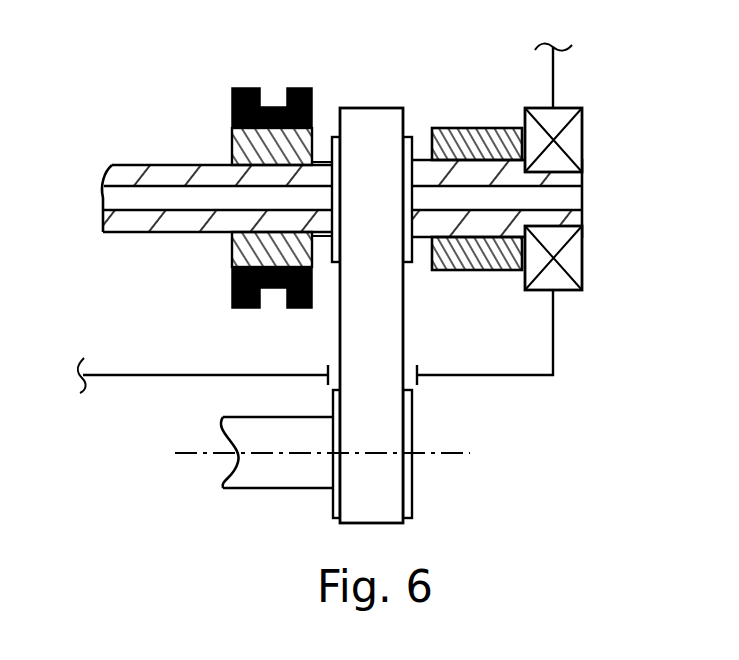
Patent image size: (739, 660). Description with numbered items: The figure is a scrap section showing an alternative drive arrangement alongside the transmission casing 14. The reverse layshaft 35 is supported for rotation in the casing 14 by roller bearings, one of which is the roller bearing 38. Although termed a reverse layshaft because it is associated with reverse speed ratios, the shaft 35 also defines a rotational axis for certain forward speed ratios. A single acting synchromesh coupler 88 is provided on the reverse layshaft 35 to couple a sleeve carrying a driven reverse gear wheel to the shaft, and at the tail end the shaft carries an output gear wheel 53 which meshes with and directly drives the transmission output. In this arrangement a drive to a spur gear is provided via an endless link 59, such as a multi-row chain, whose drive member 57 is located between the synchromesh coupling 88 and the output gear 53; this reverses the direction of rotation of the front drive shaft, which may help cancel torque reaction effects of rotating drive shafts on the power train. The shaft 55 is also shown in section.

The casing 14 is at (553, 87).
The reverse layshaft 35 is at (135, 185).
The roller bearing 38 is at (565, 138).
The output gear wheel 53 is at (467, 128).
The output shaft 55 is at (262, 480).
The drive member 57 is at (335, 137).
The endless link 59 is at (380, 127).
The synchromesh coupler 88 is at (271, 105).